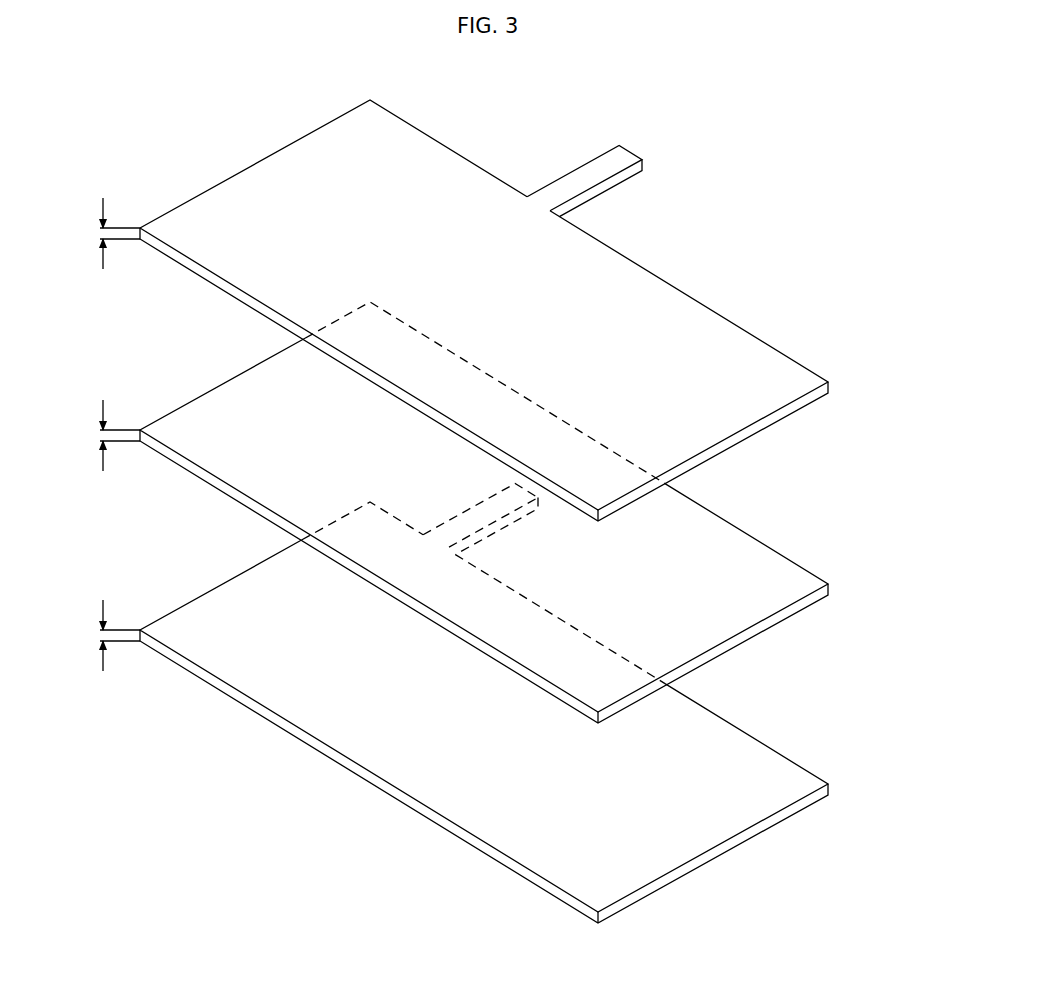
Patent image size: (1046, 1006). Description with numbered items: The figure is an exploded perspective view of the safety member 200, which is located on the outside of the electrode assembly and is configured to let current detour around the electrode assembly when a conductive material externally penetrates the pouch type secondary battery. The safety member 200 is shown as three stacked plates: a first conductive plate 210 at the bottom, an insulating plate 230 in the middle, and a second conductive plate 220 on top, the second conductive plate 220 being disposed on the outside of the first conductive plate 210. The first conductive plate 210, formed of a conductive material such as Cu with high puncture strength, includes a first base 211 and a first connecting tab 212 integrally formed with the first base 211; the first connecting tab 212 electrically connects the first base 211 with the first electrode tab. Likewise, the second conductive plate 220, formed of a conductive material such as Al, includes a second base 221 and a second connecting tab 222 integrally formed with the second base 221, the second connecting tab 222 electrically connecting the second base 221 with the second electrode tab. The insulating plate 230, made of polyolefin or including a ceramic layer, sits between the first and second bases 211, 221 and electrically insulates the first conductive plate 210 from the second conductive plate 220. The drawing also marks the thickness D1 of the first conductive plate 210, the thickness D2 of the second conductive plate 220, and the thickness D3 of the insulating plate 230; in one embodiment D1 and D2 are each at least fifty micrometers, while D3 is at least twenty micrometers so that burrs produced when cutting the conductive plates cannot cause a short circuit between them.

The safety member 200 is at (823, 109).
The first conductive plate 210 is at (840, 788).
The first base 211 is at (363, 742).
The first connecting tab 212 is at (455, 518).
The second conductive plate 220 is at (838, 385).
The second base 221 is at (293, 150).
The second connecting tab 222 is at (582, 172).
The insulating plate 230 is at (840, 586).
The thickness of the first conductive plate D1 is at (103, 600).
The thickness of the second conductive plate D2 is at (103, 198).
The thickness of the insulating plate D3 is at (103, 400).